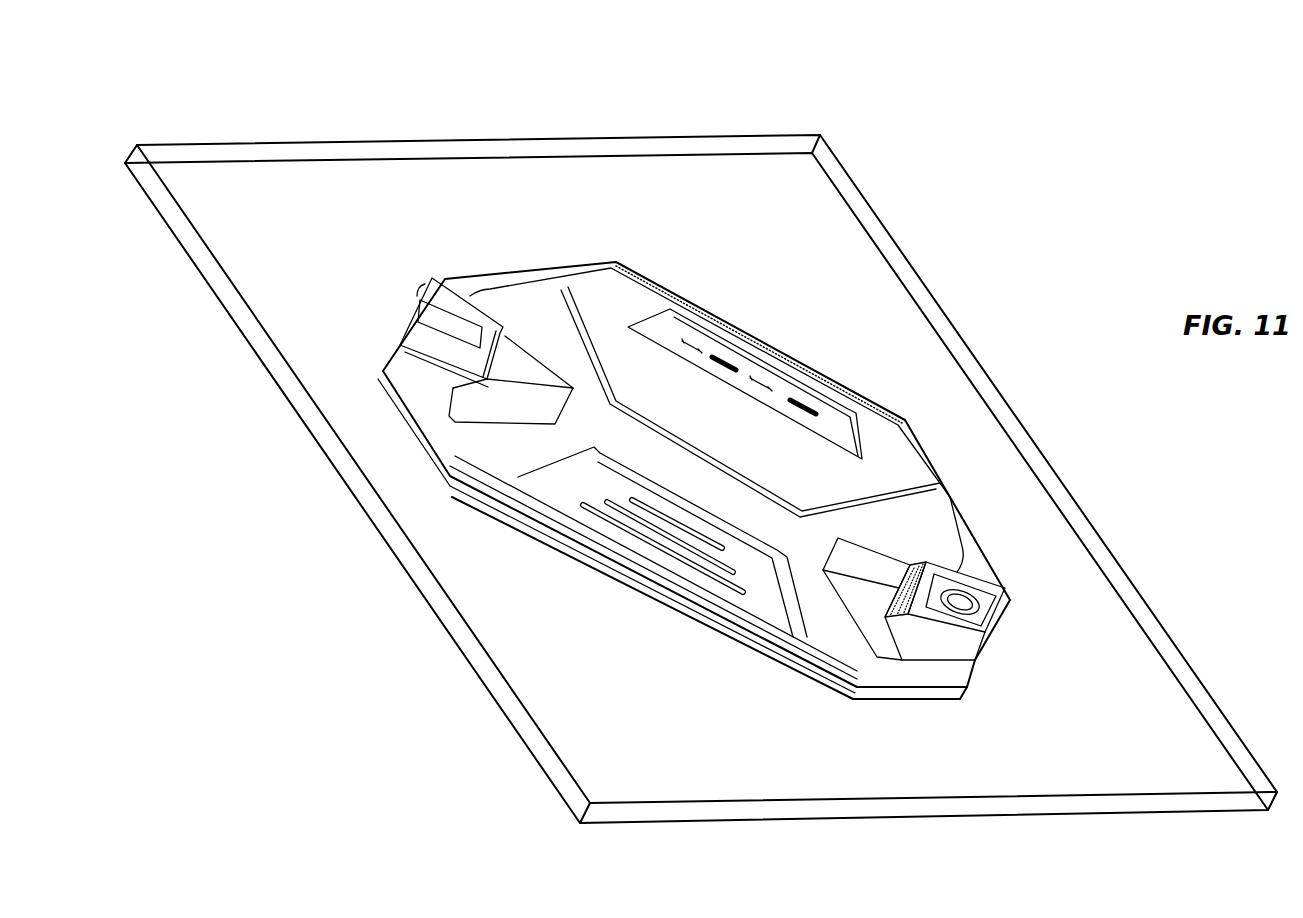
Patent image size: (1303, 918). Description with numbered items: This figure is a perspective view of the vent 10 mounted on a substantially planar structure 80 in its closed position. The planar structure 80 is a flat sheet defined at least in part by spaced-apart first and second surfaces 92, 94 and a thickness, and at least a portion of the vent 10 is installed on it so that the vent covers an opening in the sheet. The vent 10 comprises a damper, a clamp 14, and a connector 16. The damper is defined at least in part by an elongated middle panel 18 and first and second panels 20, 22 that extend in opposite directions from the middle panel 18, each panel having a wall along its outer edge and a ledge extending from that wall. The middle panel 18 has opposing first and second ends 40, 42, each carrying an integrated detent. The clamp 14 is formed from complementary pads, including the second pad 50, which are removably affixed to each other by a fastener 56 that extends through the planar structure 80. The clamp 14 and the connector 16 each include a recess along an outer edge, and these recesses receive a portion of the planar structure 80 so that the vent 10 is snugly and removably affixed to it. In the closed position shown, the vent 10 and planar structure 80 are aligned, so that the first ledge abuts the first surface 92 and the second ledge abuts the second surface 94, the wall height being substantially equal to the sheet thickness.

The vent 10 is at (820, 295).
The clamp 14 is at (1034, 593).
The connector 16 is at (456, 246).
The elongated middle panel 18 is at (758, 511).
The first panel 20 is at (738, 428).
The second panel 22 is at (578, 487).
The first end 40 is at (907, 570).
The second end 42 is at (506, 360).
The second pad 50 is at (953, 642).
The fastener 56 is at (975, 620).
The substantially planar structure 80 is at (751, 99).
The first surface 92 is at (745, 232).
The second surface 94 is at (232, 339).